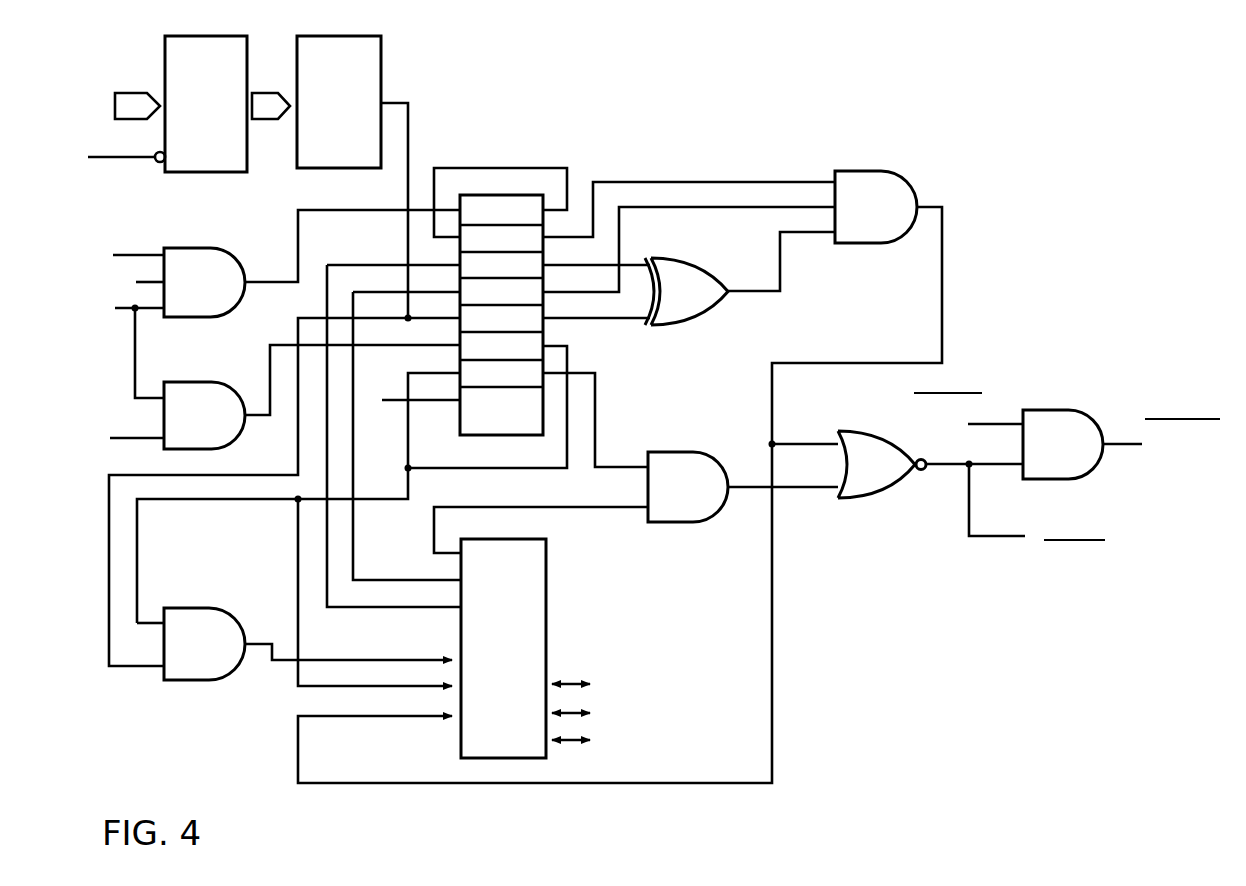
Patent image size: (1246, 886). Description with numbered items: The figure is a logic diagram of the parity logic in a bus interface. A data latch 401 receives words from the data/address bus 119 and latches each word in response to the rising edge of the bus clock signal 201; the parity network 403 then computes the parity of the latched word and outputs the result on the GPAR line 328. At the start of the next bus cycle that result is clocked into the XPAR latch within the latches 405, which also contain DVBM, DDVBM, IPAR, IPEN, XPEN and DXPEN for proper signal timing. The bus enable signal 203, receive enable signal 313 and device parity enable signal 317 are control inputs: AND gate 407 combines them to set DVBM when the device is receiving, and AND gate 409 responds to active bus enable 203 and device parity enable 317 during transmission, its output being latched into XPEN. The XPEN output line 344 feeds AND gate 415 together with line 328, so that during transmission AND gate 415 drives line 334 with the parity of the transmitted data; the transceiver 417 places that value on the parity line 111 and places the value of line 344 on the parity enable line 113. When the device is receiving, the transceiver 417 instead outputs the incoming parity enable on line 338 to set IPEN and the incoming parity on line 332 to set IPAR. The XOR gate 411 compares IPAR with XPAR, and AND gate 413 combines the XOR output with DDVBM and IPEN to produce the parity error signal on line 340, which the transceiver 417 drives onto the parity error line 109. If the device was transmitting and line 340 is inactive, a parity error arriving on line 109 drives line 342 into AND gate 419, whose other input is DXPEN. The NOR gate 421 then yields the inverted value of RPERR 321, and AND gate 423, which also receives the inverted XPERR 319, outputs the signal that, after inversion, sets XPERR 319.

The data/address bus 119 is at (116, 108).
The data latch 401 is at (206, 104).
The parity network 403 is at (339, 102).
The clock signal 201 is at (274, 288).
The GPAR line 328 is at (284, 385).
The latches 405 is at (497, 195).
The receive enable signal 313 is at (122, 256).
The bus enable signal 203 is at (127, 272).
The device parity enable signal 317 is at (124, 347).
The AND gate 407 is at (312, 263).
The AND gate 409 is at (312, 397).
The XOR gate 411 is at (740, 278).
The AND gate 413 is at (876, 207).
The parity error line 340 is at (643, 492).
The AND gate 419 is at (743, 487).
The line 342 is at (541, 530).
The NOR gate 421 is at (930, 464).
The AND gate 423 is at (1082, 444).
The XPERR 319 is at (1067, 428).
The RPERR 321 is at (1037, 512).
The AND gate 415 is at (191, 644).
The XPEN output line 344 is at (298, 529).
The AND gate 415 output line 334 is at (348, 648).
The IPAR line 332 is at (394, 436).
The IPEN line 338 is at (407, 436).
The transceiver 417 is at (503, 648).
The parity error line 109 is at (595, 684).
The parity enable line 113 is at (595, 713).
The parity line 111 is at (595, 740).